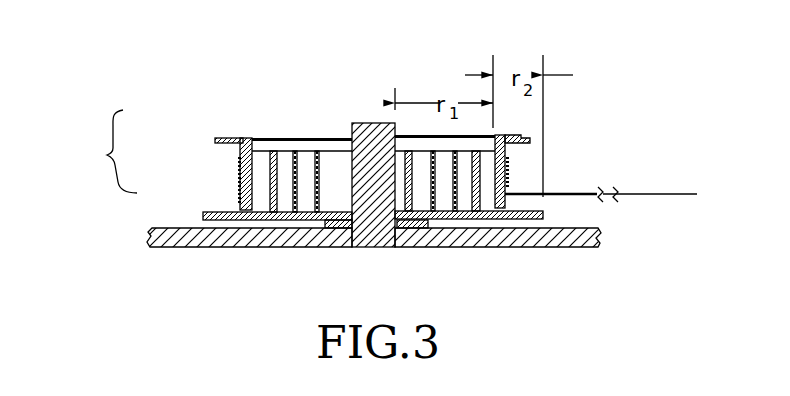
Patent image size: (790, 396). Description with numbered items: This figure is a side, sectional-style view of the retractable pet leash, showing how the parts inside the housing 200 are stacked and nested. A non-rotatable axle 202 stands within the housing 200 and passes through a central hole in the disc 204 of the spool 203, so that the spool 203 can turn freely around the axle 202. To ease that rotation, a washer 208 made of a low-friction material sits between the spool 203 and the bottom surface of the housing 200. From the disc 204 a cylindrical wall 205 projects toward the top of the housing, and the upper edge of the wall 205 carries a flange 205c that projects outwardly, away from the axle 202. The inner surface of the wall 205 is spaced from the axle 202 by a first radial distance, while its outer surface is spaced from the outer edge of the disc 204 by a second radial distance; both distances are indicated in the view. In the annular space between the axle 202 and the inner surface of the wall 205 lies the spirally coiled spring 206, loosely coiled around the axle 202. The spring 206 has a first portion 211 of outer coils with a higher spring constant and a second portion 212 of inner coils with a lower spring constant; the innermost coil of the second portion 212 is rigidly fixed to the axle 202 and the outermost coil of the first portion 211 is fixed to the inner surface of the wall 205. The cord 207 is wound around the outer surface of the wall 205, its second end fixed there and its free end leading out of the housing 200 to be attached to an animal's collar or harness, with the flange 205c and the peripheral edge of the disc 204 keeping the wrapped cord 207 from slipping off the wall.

The housing 200 is at (476, 246).
The non-rotatable axle 202 is at (373, 123).
The spool 203 is at (102, 151).
The disc 204 is at (218, 212).
The cylindrical wall 205 is at (255, 138).
The flange 205c is at (532, 136).
The spirally coiled spring 206 is at (288, 46).
The cord 207 is at (587, 194).
The washer 208 is at (333, 228).
The first portion of the coiled spring 211 is at (273, 151).
The second portion of the coiled spring 212 is at (315, 151).